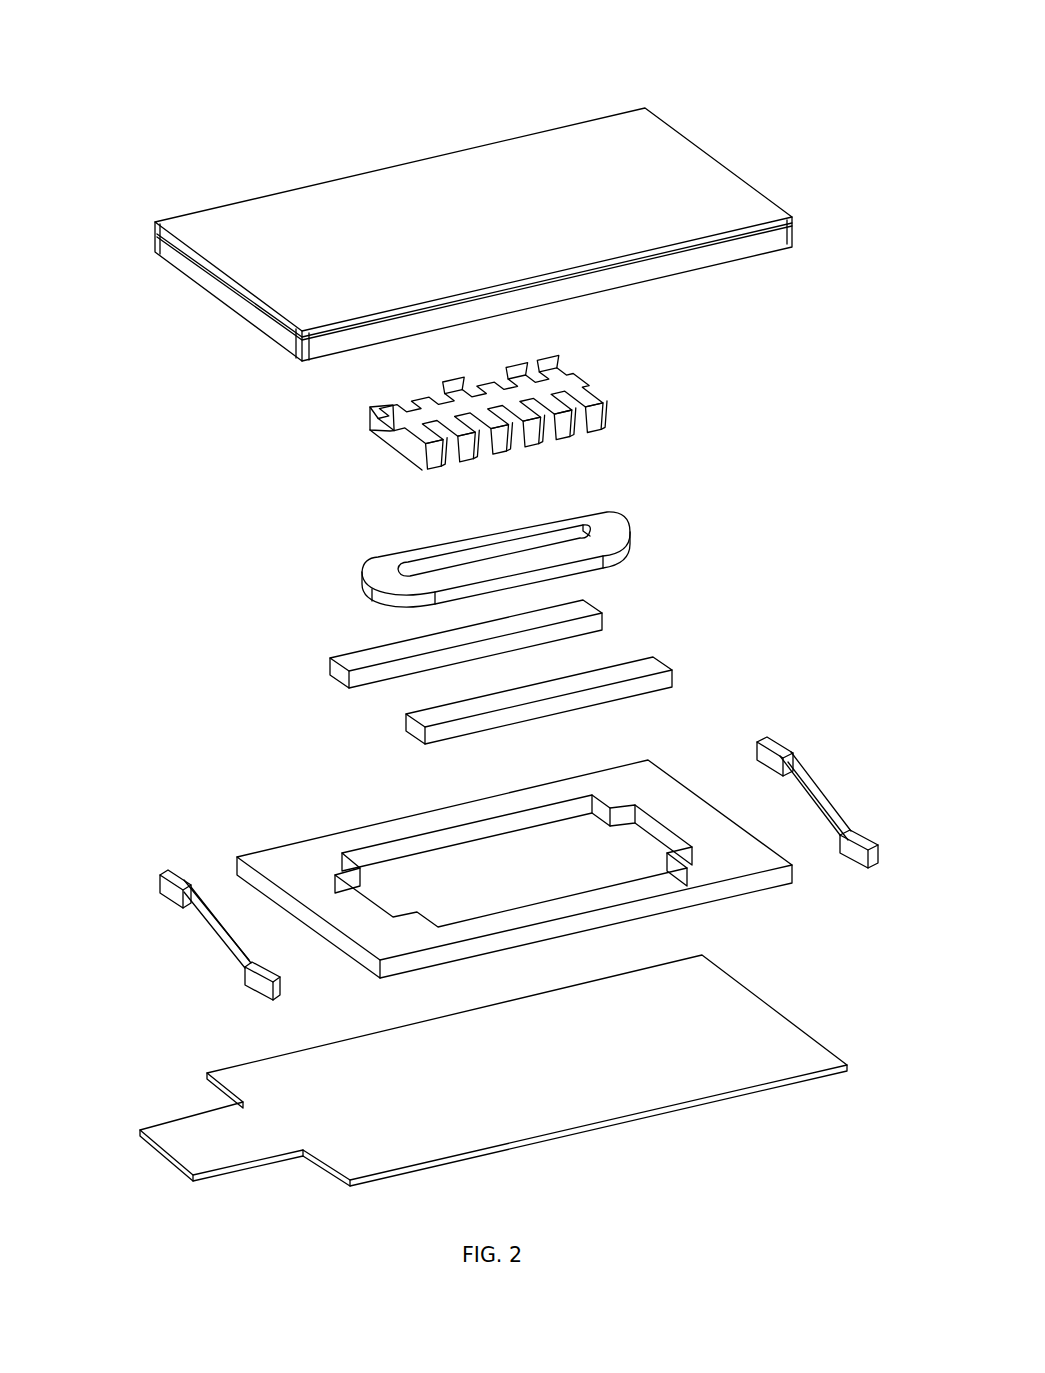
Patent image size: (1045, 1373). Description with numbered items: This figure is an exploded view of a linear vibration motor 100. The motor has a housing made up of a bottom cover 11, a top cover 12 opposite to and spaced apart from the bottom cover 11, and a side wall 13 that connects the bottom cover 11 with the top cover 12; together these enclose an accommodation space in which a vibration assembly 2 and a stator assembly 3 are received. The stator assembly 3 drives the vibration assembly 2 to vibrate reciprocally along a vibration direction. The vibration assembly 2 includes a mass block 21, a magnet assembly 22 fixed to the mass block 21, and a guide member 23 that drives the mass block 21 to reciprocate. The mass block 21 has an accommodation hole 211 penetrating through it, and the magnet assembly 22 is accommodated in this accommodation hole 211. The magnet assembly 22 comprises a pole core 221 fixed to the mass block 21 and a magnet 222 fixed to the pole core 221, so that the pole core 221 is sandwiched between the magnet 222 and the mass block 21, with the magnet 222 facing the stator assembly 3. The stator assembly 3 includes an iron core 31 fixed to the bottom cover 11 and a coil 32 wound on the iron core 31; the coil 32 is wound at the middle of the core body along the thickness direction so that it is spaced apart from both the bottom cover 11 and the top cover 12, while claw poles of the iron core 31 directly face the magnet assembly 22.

The linear vibration motor 100 is at (522, 35).
The bottom cover 11 is at (733, 1030).
The top cover 12 is at (680, 172).
The side wall 13 is at (767, 237).
The vibration assembly 2 is at (98, 573).
The mass block 21 is at (640, 775).
The accommodation hole 211 is at (465, 868).
The magnet assembly 22 is at (709, 583).
The pole core 221 is at (610, 672).
The magnet 222 is at (583, 614).
The guide member 23 is at (805, 788).
The stator assembly 3 is at (699, 380).
The iron core 31 is at (566, 388).
The coil 32 is at (570, 515).